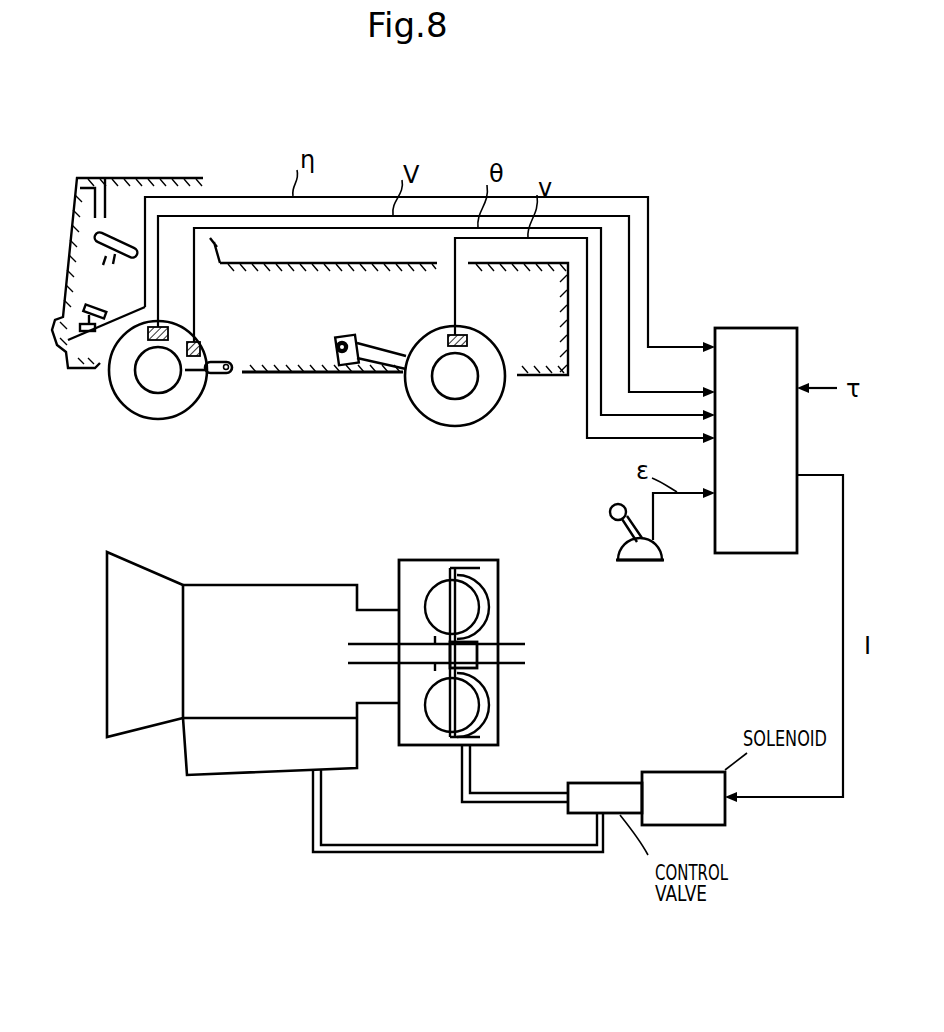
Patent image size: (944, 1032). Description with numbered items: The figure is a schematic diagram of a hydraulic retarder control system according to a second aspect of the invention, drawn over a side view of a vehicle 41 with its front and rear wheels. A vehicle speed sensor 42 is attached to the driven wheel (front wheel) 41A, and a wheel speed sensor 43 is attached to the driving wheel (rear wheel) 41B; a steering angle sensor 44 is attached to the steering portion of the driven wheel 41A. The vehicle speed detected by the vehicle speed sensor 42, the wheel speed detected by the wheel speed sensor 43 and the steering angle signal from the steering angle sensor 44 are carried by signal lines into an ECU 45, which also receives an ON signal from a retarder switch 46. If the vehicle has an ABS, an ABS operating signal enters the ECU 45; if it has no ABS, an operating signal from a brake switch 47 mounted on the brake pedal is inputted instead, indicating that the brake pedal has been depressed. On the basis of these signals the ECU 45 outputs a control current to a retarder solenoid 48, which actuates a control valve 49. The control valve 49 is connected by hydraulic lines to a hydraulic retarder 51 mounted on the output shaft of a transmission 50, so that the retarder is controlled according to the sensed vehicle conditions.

The vehicle 41 is at (319, 380).
The driven wheel (front wheel) 41A is at (199, 404).
The driving wheel (rear wheel) 41B is at (493, 413).
The vehicle speed sensor 42 is at (168, 332).
The wheel speed sensor 43 is at (467, 338).
The steering angle sensor 44 is at (200, 348).
The ECU 45 is at (747, 326).
The retarder switch 46 is at (610, 508).
The brake switch 47 is at (78, 338).
The retarder solenoid 48 is at (690, 772).
The control valve 49 is at (605, 782).
The transmission 50 is at (288, 575).
The hydraulic retarder 51 is at (431, 578).